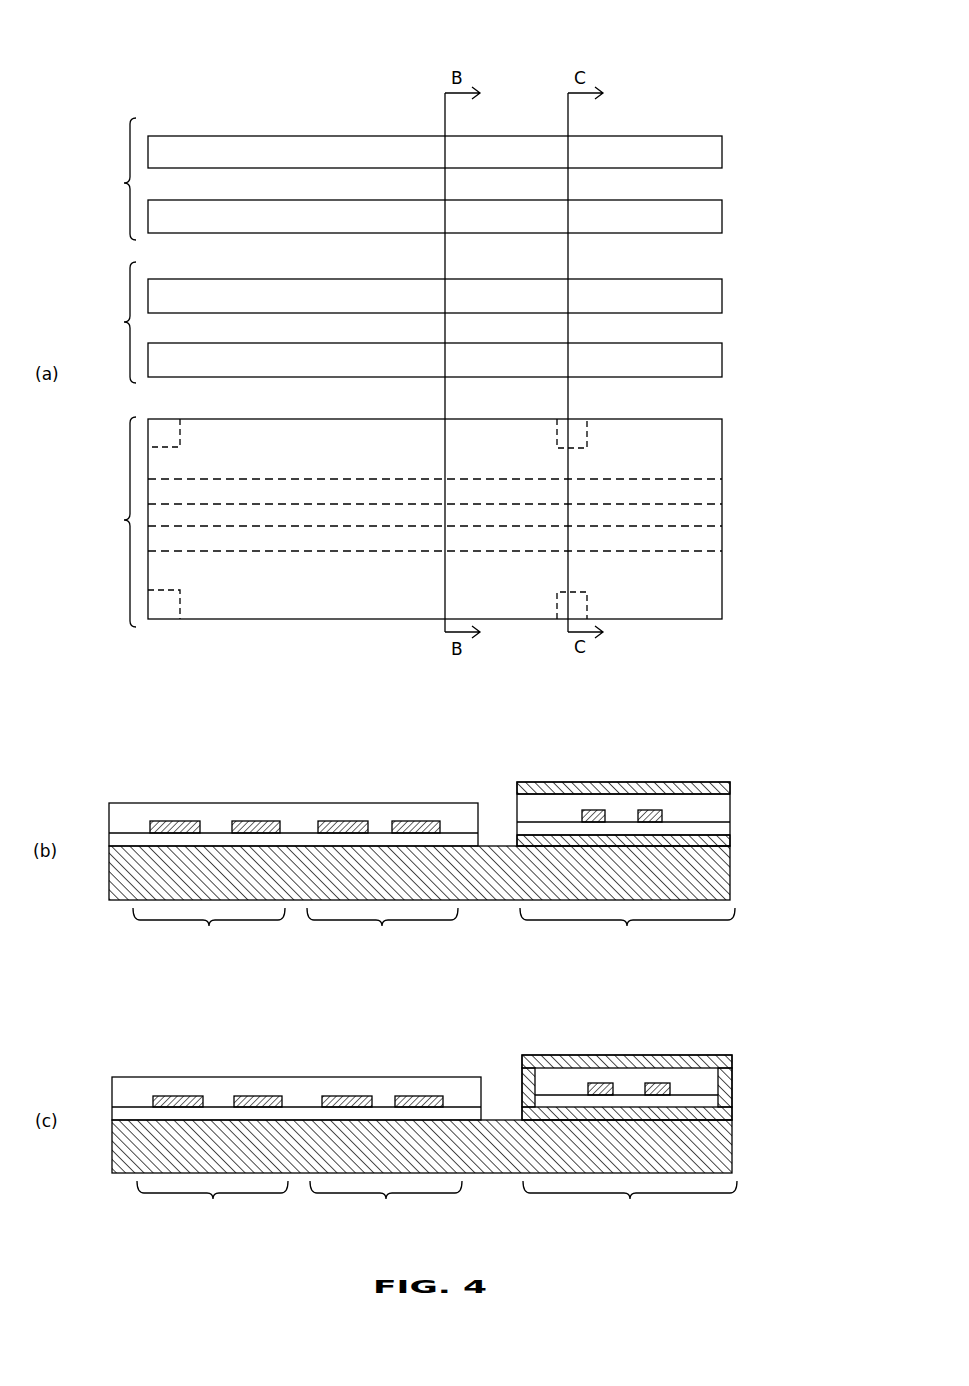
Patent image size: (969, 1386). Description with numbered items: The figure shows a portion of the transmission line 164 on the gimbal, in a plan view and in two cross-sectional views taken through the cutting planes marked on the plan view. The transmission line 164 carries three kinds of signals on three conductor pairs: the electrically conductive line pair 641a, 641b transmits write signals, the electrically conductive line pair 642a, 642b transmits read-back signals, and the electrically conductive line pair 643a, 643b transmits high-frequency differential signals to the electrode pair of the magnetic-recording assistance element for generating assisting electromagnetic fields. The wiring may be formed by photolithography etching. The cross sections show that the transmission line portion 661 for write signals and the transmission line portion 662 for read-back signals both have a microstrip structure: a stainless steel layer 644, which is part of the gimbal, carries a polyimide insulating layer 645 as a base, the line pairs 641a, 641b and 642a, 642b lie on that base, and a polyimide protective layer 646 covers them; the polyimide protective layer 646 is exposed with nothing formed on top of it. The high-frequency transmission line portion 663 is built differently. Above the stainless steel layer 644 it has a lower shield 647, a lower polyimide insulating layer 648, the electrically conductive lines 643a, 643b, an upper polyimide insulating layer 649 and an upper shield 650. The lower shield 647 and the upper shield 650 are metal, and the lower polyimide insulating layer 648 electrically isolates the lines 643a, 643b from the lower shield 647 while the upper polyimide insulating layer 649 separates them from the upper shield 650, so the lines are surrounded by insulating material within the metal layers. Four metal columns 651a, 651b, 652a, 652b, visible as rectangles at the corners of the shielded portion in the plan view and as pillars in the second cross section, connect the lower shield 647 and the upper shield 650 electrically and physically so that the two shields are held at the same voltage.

The transmission line 164 is at (235, 83).
The electrically conductive line 641a is at (722, 151).
The electrically conductive line 641b is at (722, 214).
The electrically conductive line 642a is at (722, 297).
The electrically conductive line 642b is at (722, 360).
The electrically conductive line 643a is at (722, 492).
The electrically conductive line 643b is at (722, 546).
The stainless steel layer 644 is at (730, 880).
The polyimide insulating layer 645 is at (110, 840).
The polyimide protective layer 646 is at (460, 803).
The lower shield 647 is at (730, 842).
The lower polyimide insulating layer 648 is at (517, 827).
The upper polyimide insulating layer 649 is at (730, 810).
The upper shield 650 is at (722, 443).
The column 651a is at (180, 432).
The column 651b is at (587, 432).
The column 652a is at (180, 600).
The column 652b is at (587, 604).
The transmission line portion 661 is at (188, 673).
The transmission line portion 662 is at (273, 745).
The high-frequency transmission line portion 663 is at (412, 824).